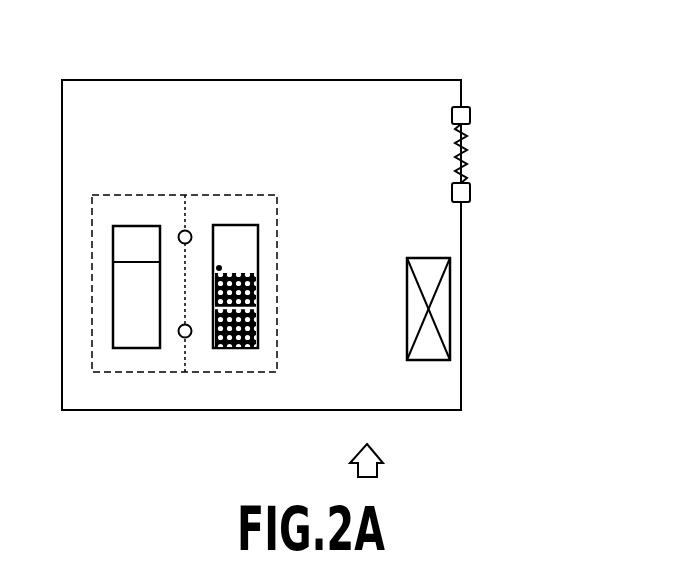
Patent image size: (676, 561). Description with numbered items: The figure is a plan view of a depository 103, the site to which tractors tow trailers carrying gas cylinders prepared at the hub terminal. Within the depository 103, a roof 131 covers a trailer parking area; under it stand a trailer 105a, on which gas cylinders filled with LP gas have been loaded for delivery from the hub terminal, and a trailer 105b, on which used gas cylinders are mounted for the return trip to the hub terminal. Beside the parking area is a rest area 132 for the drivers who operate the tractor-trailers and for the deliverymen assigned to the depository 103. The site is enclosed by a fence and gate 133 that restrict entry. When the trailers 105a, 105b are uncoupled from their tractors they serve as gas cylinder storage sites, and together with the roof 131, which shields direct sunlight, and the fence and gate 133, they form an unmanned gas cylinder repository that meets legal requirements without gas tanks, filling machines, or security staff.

The depository 103 is at (397, 80).
The roof 131 is at (152, 372).
The trailer 105a is at (240, 225).
The trailer 105b is at (140, 226).
The rest area 132 is at (452, 300).
The fence and gate 133 is at (471, 112).